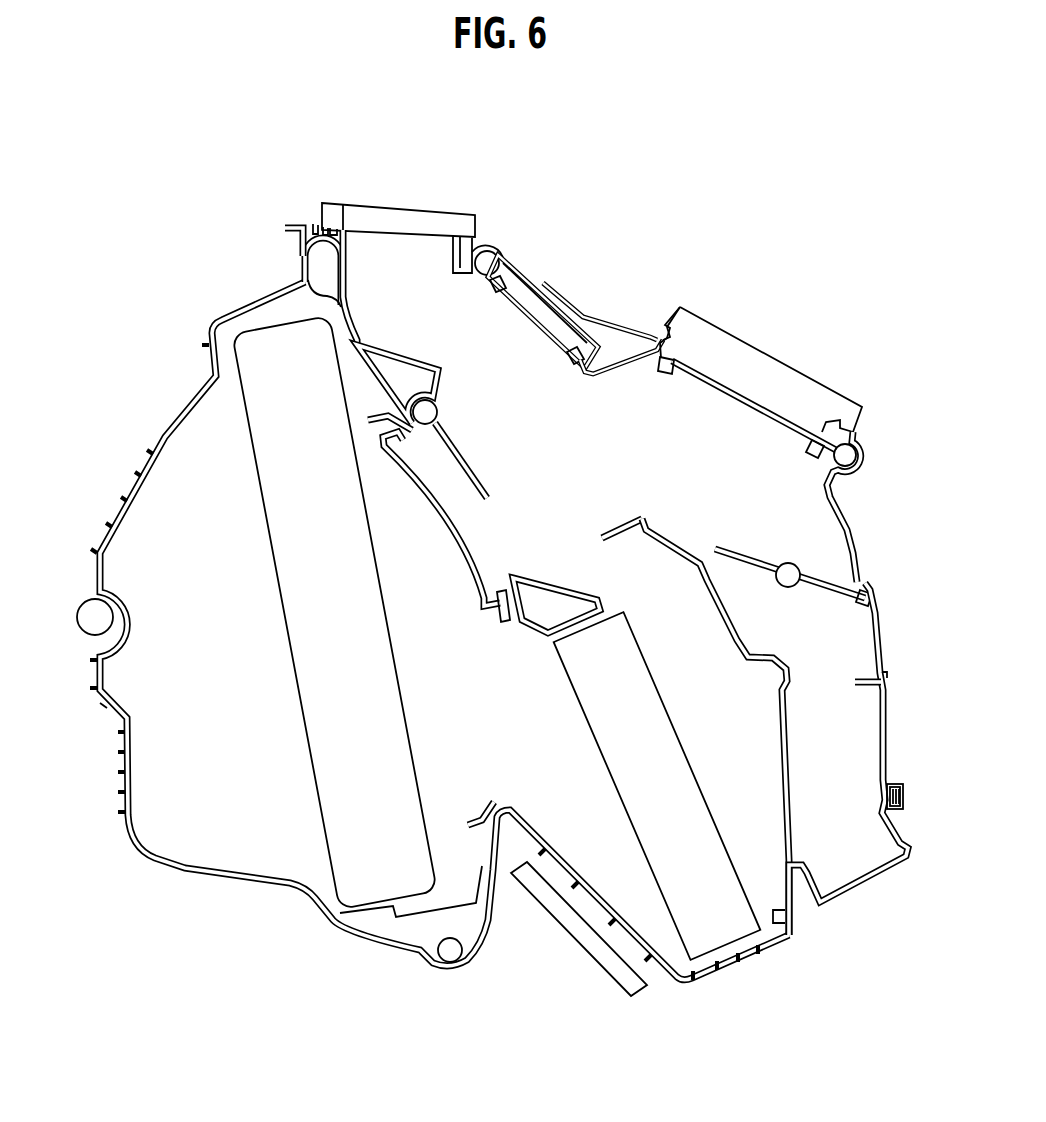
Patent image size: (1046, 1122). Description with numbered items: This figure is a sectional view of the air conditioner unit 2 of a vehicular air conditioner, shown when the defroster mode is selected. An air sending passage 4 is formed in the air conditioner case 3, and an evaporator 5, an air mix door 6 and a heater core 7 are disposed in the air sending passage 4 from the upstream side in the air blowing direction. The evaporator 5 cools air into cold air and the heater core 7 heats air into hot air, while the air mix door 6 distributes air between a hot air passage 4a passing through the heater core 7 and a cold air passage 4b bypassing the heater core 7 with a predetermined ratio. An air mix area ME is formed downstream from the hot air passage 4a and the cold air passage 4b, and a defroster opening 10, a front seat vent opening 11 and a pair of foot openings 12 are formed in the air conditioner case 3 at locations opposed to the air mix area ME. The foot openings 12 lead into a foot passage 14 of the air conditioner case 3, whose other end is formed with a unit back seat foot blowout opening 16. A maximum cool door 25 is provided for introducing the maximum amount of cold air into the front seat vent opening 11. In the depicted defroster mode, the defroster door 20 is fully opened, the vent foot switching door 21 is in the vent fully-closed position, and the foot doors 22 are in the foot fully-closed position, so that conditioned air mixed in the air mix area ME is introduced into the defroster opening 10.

The air conditioner unit 2 is at (115, 301).
The air conditioner case 3 is at (128, 491).
The air sending passage 4 is at (185, 664).
The hot air passage 4a is at (745, 815).
The cold air passage 4b is at (497, 513).
The evaporator 5 is at (317, 787).
The air mix door 6 is at (470, 577).
The heater core 7 is at (688, 932).
The defroster opening 10 is at (400, 202).
The front seat vent opening 11 is at (730, 360).
The air mix area ME is at (570, 475).
The foot openings 12 is at (772, 493).
The foot passage 14 is at (853, 708).
The unit back seat foot blowout opening 16 is at (852, 878).
The defroster door 20 is at (520, 295).
The vent foot switching door 21 is at (777, 412).
The foot doors 22 is at (818, 582).
The maximum cool door 25 is at (473, 475).